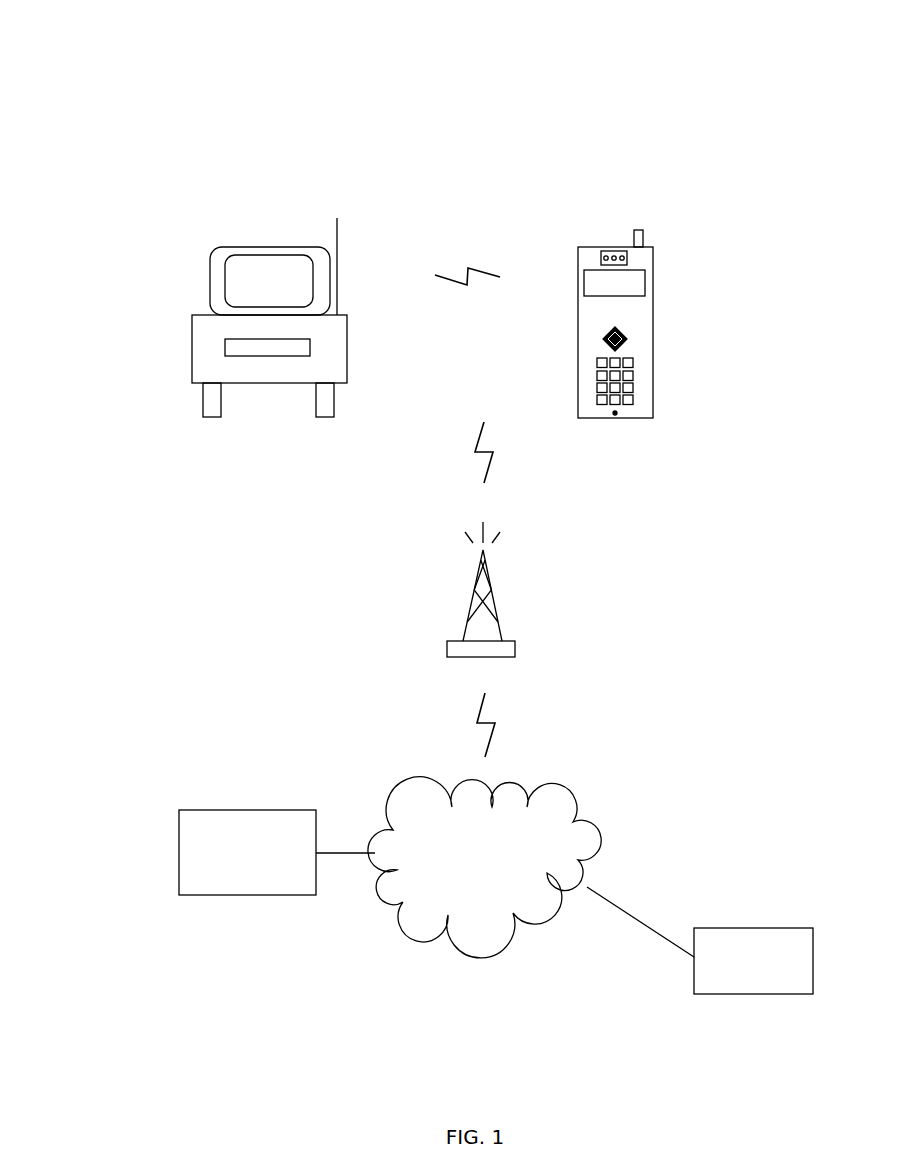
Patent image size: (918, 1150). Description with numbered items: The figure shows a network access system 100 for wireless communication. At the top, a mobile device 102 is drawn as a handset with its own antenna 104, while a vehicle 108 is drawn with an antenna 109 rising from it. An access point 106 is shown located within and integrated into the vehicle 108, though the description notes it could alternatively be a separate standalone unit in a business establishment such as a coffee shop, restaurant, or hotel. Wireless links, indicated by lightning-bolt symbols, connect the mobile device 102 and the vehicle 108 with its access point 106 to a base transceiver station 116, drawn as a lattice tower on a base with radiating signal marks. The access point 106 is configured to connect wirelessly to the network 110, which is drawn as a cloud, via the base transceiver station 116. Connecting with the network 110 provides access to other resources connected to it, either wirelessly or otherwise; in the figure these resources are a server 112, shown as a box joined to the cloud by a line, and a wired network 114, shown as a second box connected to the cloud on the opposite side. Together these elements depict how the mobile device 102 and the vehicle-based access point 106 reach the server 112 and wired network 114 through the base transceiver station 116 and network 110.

The network access system 100 is at (84, 73).
The mobile device 102 is at (653, 317).
The antenna 104 is at (633, 238).
The access point 106 is at (223, 347).
The vehicle 108 is at (347, 342).
The antenna 109 is at (335, 233).
The network 110 is at (563, 800).
The server 112 is at (767, 928).
The wired network 114 is at (179, 868).
The base transceiver station 116 is at (515, 647).